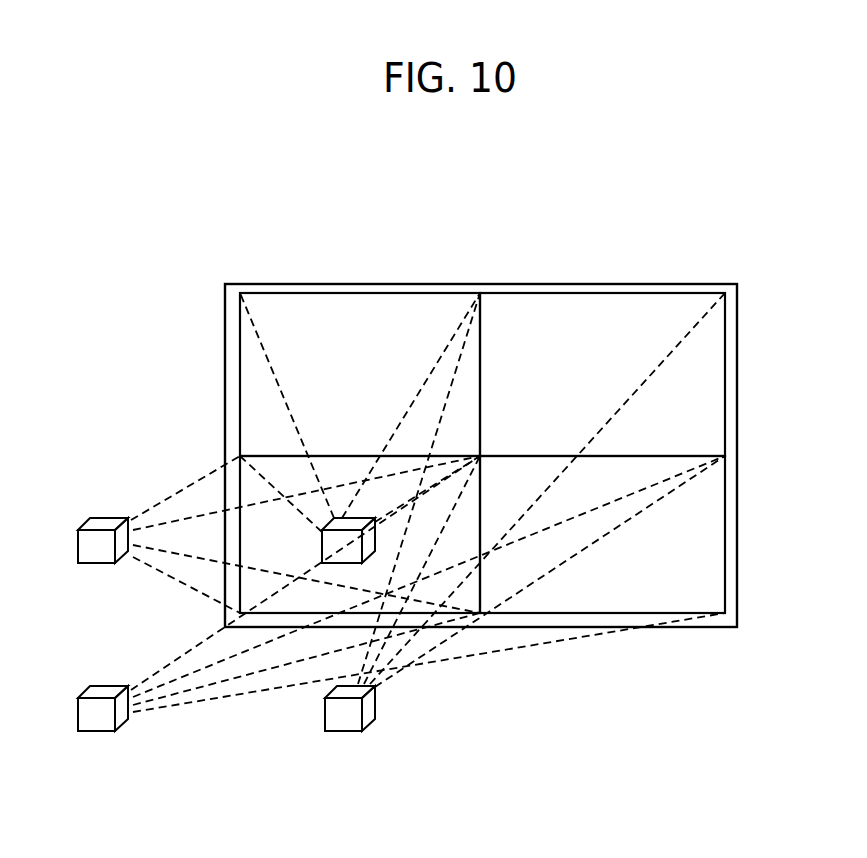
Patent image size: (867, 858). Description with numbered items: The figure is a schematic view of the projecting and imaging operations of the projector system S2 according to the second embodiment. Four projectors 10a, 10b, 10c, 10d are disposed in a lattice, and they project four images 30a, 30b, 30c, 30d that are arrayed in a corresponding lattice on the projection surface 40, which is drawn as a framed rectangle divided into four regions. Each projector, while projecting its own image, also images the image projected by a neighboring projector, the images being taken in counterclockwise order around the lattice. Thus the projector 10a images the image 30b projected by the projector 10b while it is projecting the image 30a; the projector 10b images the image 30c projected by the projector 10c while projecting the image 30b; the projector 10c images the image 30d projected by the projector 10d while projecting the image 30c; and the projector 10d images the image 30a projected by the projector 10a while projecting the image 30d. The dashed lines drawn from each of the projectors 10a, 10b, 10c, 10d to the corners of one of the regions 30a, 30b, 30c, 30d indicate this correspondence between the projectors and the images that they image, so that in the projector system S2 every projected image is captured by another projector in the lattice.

The projector system S2 is at (458, 426).
The screen frame 40 is at (226, 287).
The image 30a is at (358, 292).
The image 30b is at (238, 487).
The image 30c is at (603, 615).
The image 30d is at (600, 292).
The projector 10a is at (98, 565).
The projector 10b is at (98, 732).
The projector 10c is at (343, 732).
The projector 10d is at (342, 565).